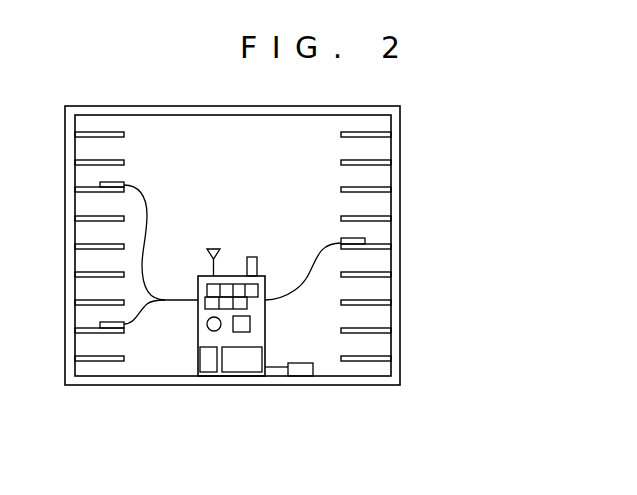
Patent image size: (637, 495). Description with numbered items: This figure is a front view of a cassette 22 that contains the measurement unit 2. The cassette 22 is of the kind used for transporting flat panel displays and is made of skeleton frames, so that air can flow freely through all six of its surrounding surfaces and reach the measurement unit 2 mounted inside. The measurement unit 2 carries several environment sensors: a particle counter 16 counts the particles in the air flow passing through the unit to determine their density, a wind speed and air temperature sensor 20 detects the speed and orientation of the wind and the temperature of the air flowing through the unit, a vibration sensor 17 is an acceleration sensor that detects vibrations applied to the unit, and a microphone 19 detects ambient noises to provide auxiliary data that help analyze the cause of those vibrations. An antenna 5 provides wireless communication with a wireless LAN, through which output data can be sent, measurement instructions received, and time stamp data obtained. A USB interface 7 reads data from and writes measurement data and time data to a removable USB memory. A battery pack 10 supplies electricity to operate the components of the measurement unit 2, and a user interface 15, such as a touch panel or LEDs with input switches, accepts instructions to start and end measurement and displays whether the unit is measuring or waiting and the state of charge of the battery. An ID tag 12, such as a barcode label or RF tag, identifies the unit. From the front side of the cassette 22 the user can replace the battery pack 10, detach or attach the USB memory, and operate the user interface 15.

The measurement unit 2 is at (267, 317).
The antenna 5 is at (213, 248).
The USB interface 7 is at (250, 323).
The battery pack 10 is at (233, 367).
The ID tag 12 is at (208, 360).
The user interface 15 is at (205, 300).
The particle counter 16 is at (122, 182).
The vibration sensor 17 is at (301, 369).
The microphone 19 is at (207, 324).
The wind speed and air temperature sensor 20 is at (250, 256).
The cassette 22 is at (250, 484).